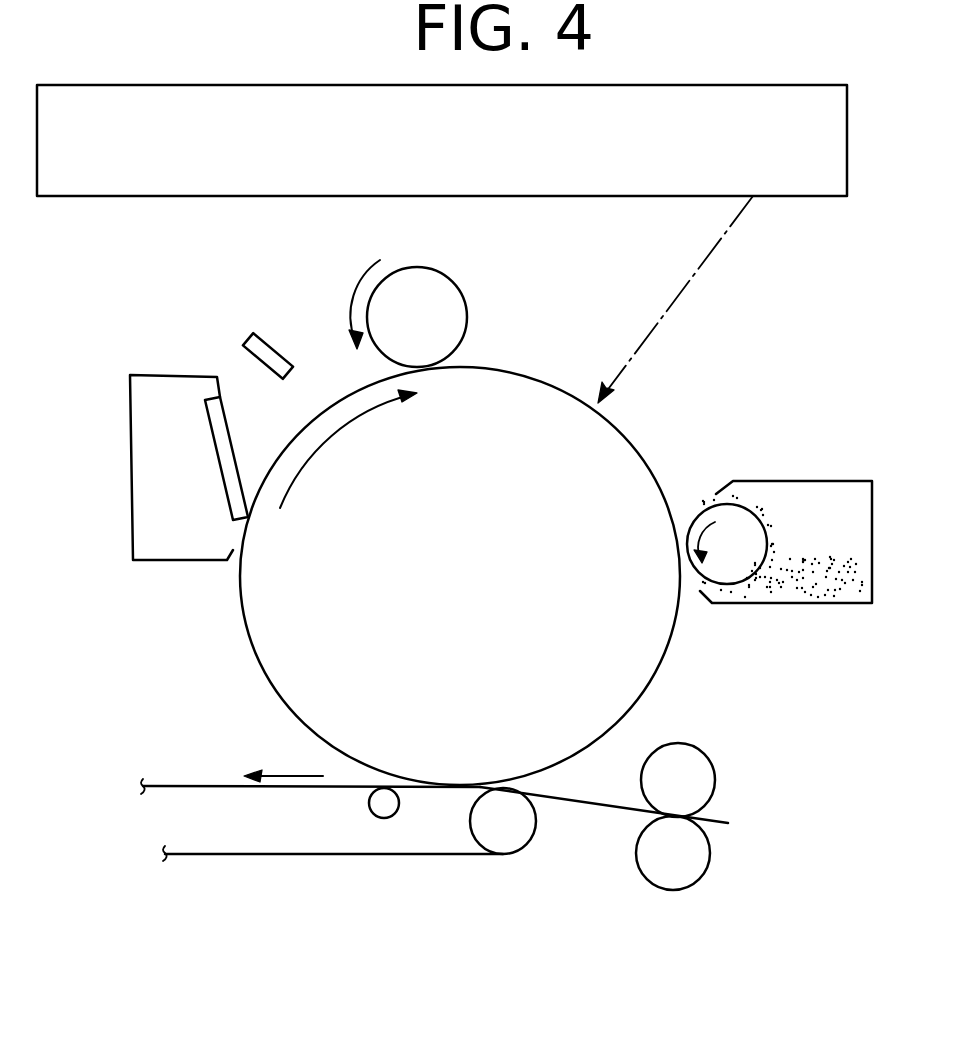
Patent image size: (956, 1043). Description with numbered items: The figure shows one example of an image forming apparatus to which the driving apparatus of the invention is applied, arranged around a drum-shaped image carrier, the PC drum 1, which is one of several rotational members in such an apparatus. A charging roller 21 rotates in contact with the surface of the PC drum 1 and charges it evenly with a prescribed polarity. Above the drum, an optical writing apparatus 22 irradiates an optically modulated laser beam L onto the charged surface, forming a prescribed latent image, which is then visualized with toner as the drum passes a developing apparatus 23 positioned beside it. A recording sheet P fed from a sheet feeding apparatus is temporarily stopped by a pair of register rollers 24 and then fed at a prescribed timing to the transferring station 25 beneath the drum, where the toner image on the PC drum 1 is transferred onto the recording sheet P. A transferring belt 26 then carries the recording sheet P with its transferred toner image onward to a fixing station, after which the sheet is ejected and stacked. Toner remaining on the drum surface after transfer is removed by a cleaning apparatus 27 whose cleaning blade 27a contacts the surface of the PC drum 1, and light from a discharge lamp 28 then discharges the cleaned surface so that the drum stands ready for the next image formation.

The PC drum 1 is at (638, 453).
The charging roller 21 is at (457, 297).
The optical writing apparatus 22 is at (248, 196).
The laser beam L is at (687, 285).
The developing device 23 is at (795, 481).
The register rollers 24 is at (750, 777).
The transferring station 25 is at (470, 786).
The transferring belt 26 is at (188, 785).
The cleaning apparatus 27 is at (170, 560).
The cleaning blade 27a is at (218, 428).
The discharge lamp 28 is at (248, 340).
The recording sheet P is at (607, 808).